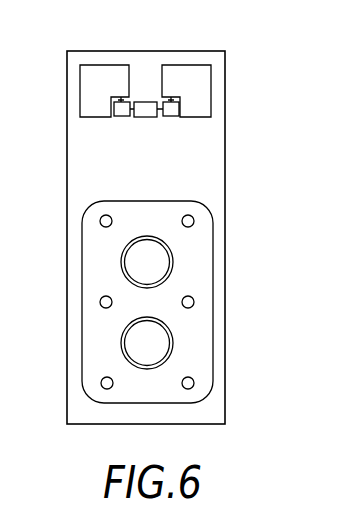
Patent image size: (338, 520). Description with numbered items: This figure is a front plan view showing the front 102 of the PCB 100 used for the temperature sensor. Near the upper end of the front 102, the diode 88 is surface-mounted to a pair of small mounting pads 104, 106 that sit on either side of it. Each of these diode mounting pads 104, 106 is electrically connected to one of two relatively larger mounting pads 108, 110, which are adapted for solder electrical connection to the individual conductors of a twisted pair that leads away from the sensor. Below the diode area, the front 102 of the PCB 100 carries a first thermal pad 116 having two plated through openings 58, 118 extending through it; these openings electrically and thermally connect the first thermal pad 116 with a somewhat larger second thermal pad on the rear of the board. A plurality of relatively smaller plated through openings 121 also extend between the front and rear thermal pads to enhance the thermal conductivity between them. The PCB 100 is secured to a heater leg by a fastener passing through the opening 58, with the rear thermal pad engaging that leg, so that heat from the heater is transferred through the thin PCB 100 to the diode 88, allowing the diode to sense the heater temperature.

The front 102 is at (95, 55).
The diode 88 is at (144, 100).
The mounting pad 110 is at (87, 88).
The mounting pad 108 is at (203, 87).
The mounting pad 106 is at (123, 118).
The mounting pad 104 is at (168, 118).
The first thermal pad 116 is at (193, 202).
The PCB 100 is at (273, 268).
The plated through opening 118 is at (140, 250).
The plated through opening 58 is at (163, 350).
The plated through openings 121 is at (105, 309).